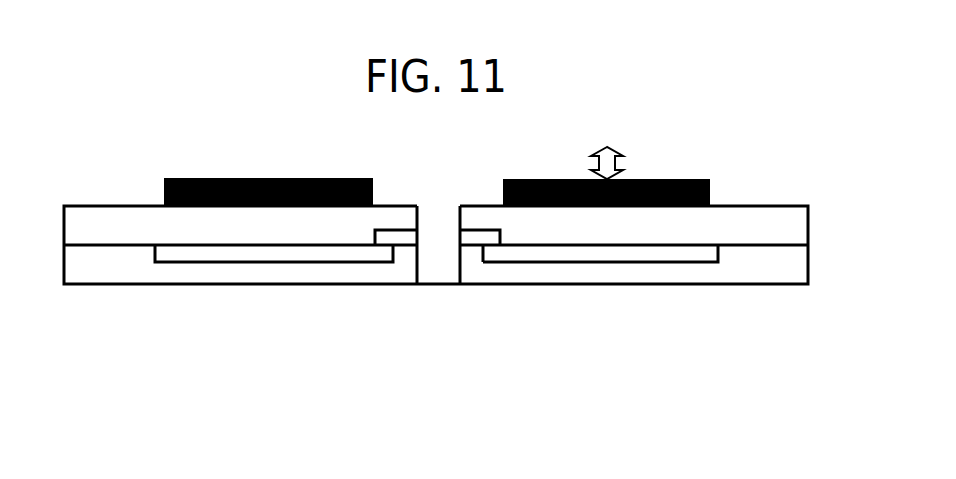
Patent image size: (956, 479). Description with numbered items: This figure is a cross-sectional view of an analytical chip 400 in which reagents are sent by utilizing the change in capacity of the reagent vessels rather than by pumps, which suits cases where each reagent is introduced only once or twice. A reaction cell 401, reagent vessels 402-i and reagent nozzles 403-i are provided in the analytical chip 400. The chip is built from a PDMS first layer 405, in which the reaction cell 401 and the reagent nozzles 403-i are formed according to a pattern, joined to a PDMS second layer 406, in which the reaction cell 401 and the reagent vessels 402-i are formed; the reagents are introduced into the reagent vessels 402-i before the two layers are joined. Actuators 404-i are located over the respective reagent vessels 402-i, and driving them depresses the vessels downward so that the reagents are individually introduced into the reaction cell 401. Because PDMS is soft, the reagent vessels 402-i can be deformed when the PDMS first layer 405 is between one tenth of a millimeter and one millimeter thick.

The analytical chip 400 is at (103, 265).
The reaction cell 401 is at (437, 268).
The reagent vessels 402-i is at (616, 255).
The reagent nozzles 403-i is at (470, 239).
The actuators 404-i is at (698, 153).
The PDMS first layer 405 is at (98, 220).
The PDMS second layer 406 is at (140, 265).